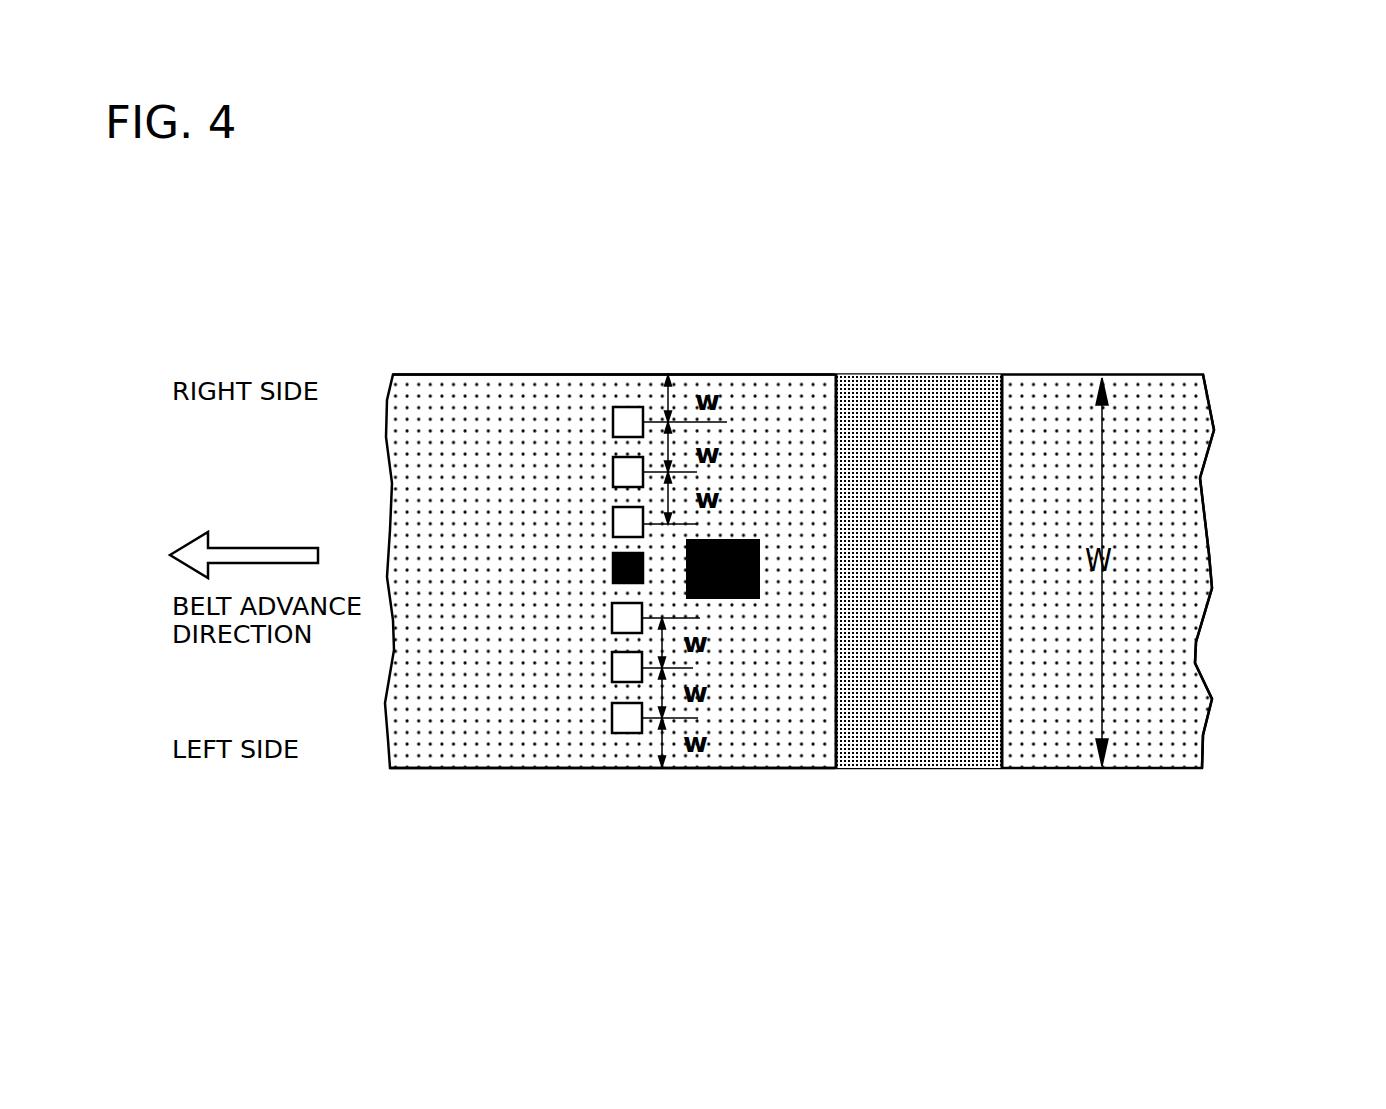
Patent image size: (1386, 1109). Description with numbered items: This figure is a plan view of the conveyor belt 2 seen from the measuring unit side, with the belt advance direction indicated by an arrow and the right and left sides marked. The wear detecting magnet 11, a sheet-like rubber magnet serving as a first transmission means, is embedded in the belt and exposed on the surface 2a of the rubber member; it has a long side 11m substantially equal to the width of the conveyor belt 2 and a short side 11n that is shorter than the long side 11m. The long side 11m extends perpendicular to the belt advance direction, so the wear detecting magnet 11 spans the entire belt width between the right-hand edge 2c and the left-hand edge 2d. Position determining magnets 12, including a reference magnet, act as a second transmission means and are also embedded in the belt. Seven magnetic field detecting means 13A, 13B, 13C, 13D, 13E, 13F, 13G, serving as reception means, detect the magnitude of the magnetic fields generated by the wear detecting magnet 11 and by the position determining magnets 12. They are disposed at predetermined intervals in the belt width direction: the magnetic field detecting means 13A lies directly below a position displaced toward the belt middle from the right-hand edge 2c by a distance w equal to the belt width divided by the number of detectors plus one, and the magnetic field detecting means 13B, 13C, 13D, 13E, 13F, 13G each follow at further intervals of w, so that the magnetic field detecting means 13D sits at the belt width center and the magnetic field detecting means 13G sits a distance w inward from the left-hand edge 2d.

The conveyor belt 2 is at (1168, 506).
The surface of the rubber member 2a is at (1171, 712).
The right-hand edge 2c is at (428, 391).
The left-hand edge 2d is at (438, 750).
The wear detecting magnet 11 is at (878, 713).
The short side 11n is at (940, 375).
The long side 11m is at (1003, 480).
The position determining magnet 12 is at (738, 600).
The magnetic field detecting means 13A is at (627, 424).
The magnetic field detecting means 13B is at (628, 472).
The magnetic field detecting means 13C is at (628, 520).
The magnetic field detecting means 13D is at (620, 560).
The magnetic field detecting means 13E is at (633, 622).
The magnetic field detecting means 13F is at (635, 665).
The magnetic field detecting means 13G is at (635, 717).